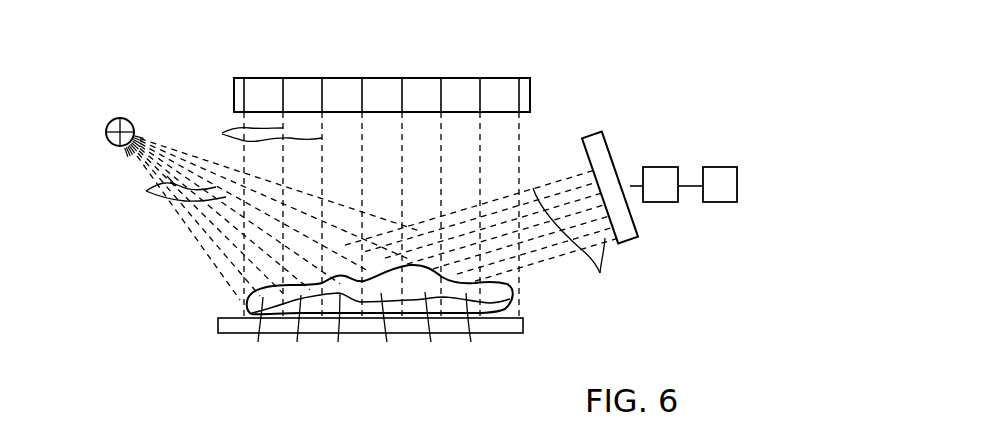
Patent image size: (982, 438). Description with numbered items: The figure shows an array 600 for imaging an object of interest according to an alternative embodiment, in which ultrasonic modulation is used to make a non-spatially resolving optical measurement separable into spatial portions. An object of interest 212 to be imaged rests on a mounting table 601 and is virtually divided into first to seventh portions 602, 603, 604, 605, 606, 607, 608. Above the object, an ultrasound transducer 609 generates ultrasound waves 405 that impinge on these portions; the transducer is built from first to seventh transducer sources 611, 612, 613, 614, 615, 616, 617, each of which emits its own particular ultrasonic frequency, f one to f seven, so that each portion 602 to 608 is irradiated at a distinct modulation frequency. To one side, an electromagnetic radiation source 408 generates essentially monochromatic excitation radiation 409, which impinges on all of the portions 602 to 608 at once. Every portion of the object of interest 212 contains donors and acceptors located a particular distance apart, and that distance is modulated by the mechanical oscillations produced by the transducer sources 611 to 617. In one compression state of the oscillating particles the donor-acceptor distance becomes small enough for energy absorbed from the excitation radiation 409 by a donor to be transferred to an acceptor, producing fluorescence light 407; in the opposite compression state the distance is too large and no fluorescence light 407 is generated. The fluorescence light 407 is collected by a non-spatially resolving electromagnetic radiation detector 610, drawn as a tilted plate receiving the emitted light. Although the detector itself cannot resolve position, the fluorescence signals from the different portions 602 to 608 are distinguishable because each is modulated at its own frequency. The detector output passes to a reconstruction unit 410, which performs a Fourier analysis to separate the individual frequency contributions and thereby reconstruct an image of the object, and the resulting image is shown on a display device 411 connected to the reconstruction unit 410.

The imaging system 600 is at (622, 73).
The electromagnetic radiation source 408 is at (111, 121).
The excitation radiation 409 is at (165, 196).
The ultrasound waves 405 is at (279, 212).
The ultrasound transducer 609 is at (232, 92).
The first transducer source 611 is at (252, 82).
The second transducer source 612 is at (297, 82).
The third transducer source 613 is at (345, 82).
The fourth transducer source 614 is at (388, 82).
The fifth transducer source 615 is at (433, 82).
The sixth transducer source 616 is at (475, 82).
The seventh transducer source 617 is at (512, 82).
The object of interest 212 is at (238, 298).
The seventh portion 608 is at (506, 299).
The mounting table 601 is at (218, 324).
The first portion 602 is at (255, 332).
The second portion 603 is at (300, 331).
The third portion 604 is at (346, 330).
The fourth portion 605 is at (390, 330).
The fifth portion 606 is at (434, 329).
The sixth portion 607 is at (477, 330).
The fluorescence light 407 is at (481, 236).
The electromagnetic radiation detector 610 is at (592, 133).
The reconstruction unit 410 is at (661, 167).
The display device 411 is at (720, 167).